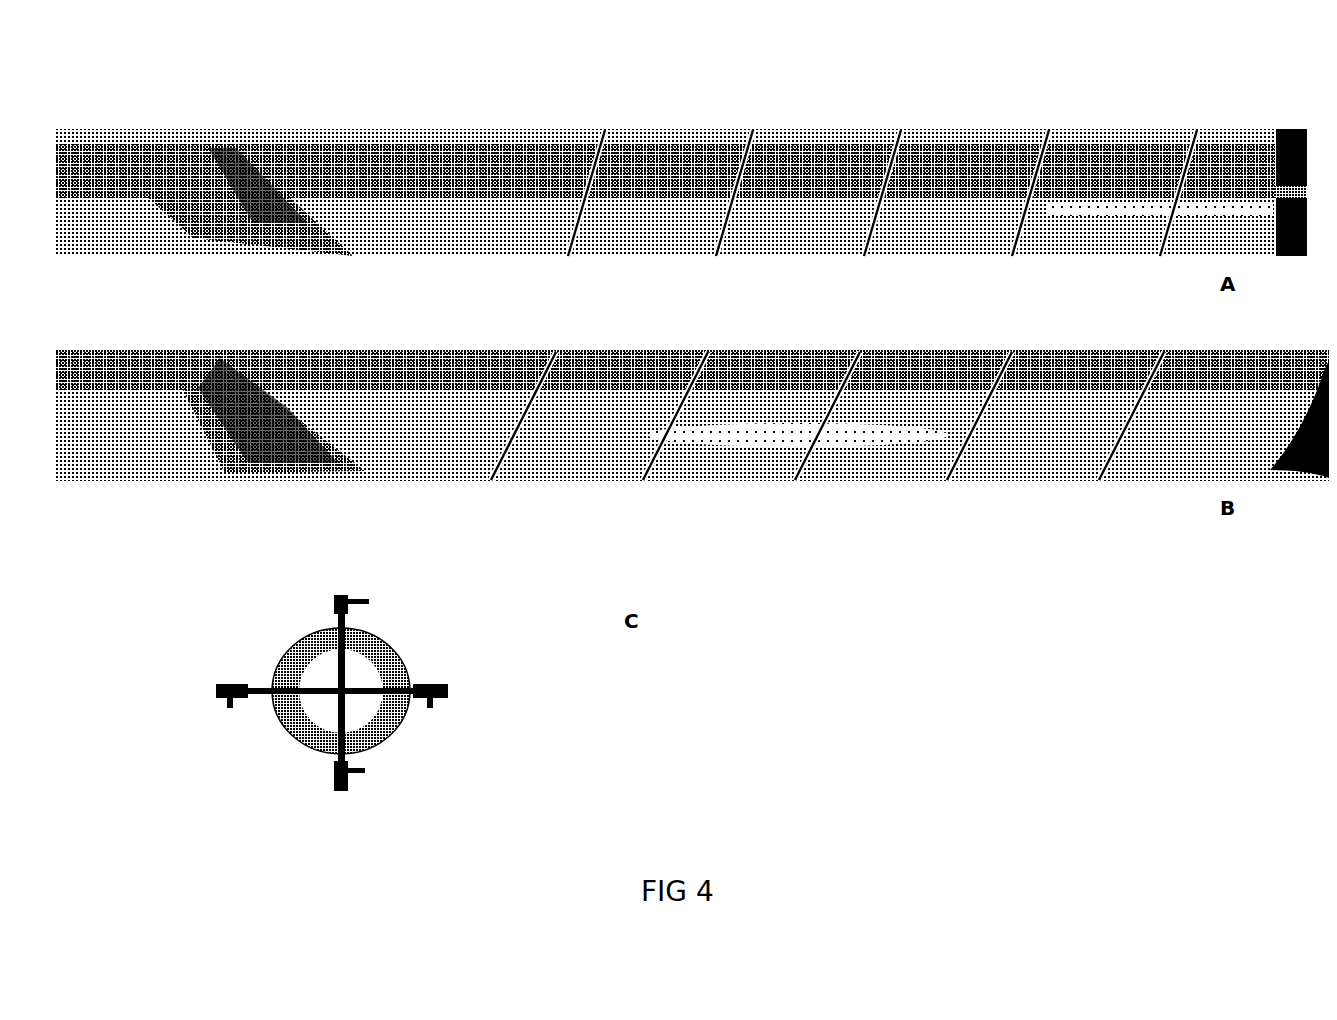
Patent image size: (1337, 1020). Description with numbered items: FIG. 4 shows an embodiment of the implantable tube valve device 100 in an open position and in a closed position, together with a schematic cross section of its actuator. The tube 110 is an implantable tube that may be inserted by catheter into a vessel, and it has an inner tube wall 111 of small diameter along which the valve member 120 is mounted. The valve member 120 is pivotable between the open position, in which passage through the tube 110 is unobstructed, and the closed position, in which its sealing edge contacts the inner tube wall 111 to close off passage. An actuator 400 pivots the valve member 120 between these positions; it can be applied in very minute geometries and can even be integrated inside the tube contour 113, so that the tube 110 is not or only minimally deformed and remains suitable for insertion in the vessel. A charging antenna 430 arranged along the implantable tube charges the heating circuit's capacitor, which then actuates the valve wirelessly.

The implantable tube valve device 100 is at (528, 97).
The tube 110 is at (470, 223).
The inner tube wall 111 is at (87, 128).
The tube contour 113 is at (898, 478).
The valve member 120 is at (188, 165).
The actuator 400 is at (313, 160).
The charging antenna 430 is at (717, 170).